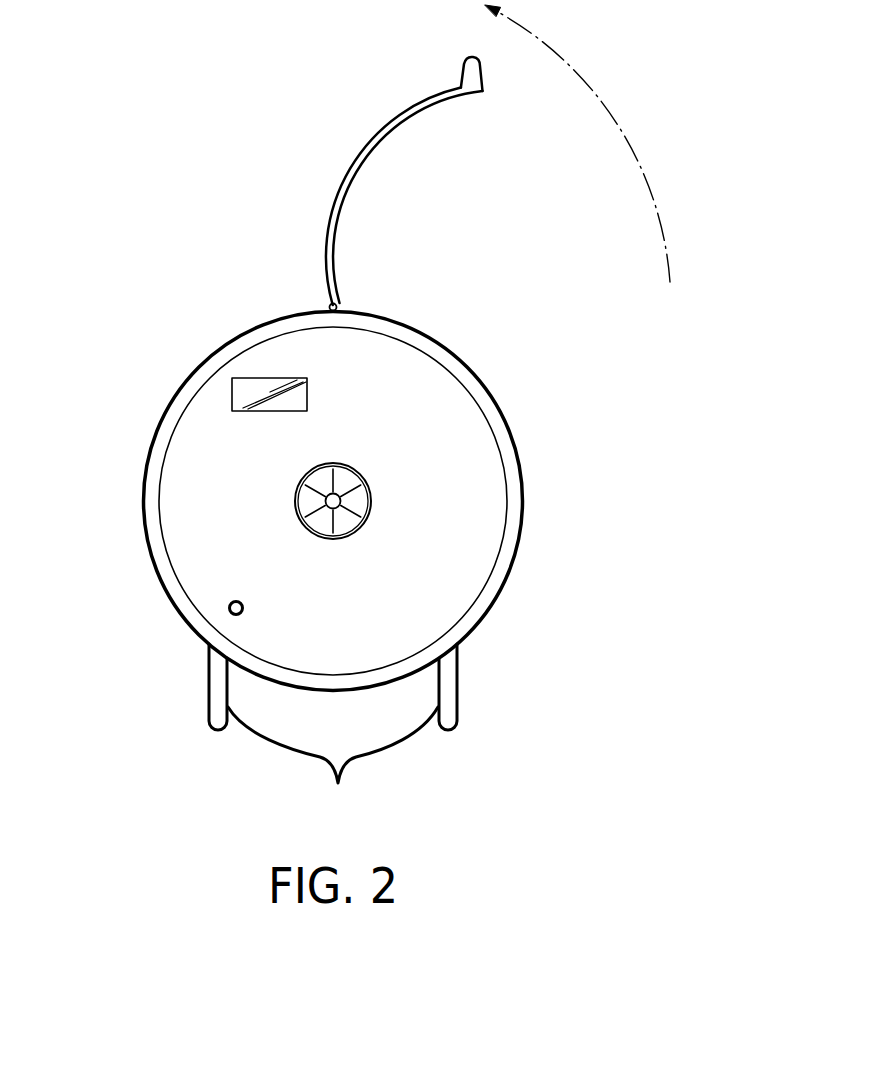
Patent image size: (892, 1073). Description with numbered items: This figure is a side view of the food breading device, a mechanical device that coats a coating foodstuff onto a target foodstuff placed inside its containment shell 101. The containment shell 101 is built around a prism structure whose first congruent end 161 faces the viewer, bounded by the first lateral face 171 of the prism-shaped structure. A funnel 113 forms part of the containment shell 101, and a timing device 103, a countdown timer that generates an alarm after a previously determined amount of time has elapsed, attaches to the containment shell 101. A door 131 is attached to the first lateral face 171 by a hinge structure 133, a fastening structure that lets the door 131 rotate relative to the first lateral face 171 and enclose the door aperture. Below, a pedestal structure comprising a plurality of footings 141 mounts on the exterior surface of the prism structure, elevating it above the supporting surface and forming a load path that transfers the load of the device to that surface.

The containment shell 101 is at (163, 230).
The timing device 103 is at (267, 410).
The funnel 113 is at (341, 501).
The door 131 is at (362, 182).
The hinge structure 133 is at (330, 305).
The footings 141 is at (333, 736).
The first congruent end 161 is at (453, 542).
The first lateral face 171 is at (512, 567).